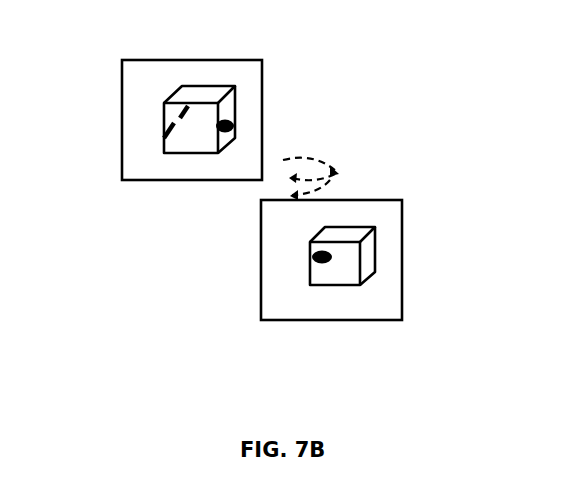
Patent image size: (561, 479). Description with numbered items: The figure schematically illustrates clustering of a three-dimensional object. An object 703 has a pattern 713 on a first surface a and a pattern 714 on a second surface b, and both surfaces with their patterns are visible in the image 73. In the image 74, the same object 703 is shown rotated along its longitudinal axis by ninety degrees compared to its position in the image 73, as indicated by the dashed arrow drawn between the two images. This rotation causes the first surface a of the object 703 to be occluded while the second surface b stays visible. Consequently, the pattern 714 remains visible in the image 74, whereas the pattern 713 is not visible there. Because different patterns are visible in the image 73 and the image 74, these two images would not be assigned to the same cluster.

The image 73 is at (120, 153).
The image 74 is at (261, 295).
The object 703 is at (214, 79).
The pattern 713 is at (175, 120).
The pattern 714 is at (233, 126).
The first surface a is at (183, 137).
The second surface b is at (226, 113).